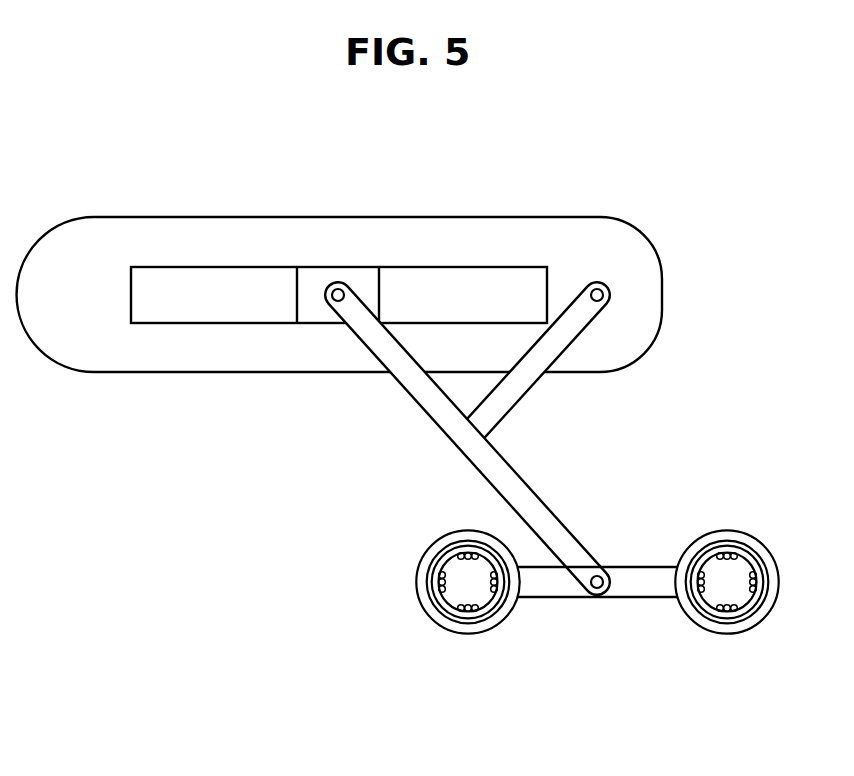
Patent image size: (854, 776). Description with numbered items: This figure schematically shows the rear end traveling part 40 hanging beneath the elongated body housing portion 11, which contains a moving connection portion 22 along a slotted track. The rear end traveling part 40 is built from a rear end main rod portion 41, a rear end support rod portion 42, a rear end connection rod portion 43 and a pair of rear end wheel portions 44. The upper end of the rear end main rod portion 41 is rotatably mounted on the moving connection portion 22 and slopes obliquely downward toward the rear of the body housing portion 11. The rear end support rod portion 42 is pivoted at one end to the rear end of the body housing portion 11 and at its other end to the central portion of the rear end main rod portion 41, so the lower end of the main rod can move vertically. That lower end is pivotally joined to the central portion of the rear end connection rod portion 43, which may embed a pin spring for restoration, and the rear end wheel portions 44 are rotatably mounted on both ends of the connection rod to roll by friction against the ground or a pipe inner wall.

The body housing portion 11 is at (636, 229).
The moving connection portion 22 is at (317, 284).
The rear end traveling part 40 is at (300, 512).
The rear end main rod portion 41 is at (410, 382).
The rear end support rod portion 42 is at (506, 400).
The rear end connection rod portion 43 is at (537, 585).
The rear end wheel portion 44 is at (425, 610).